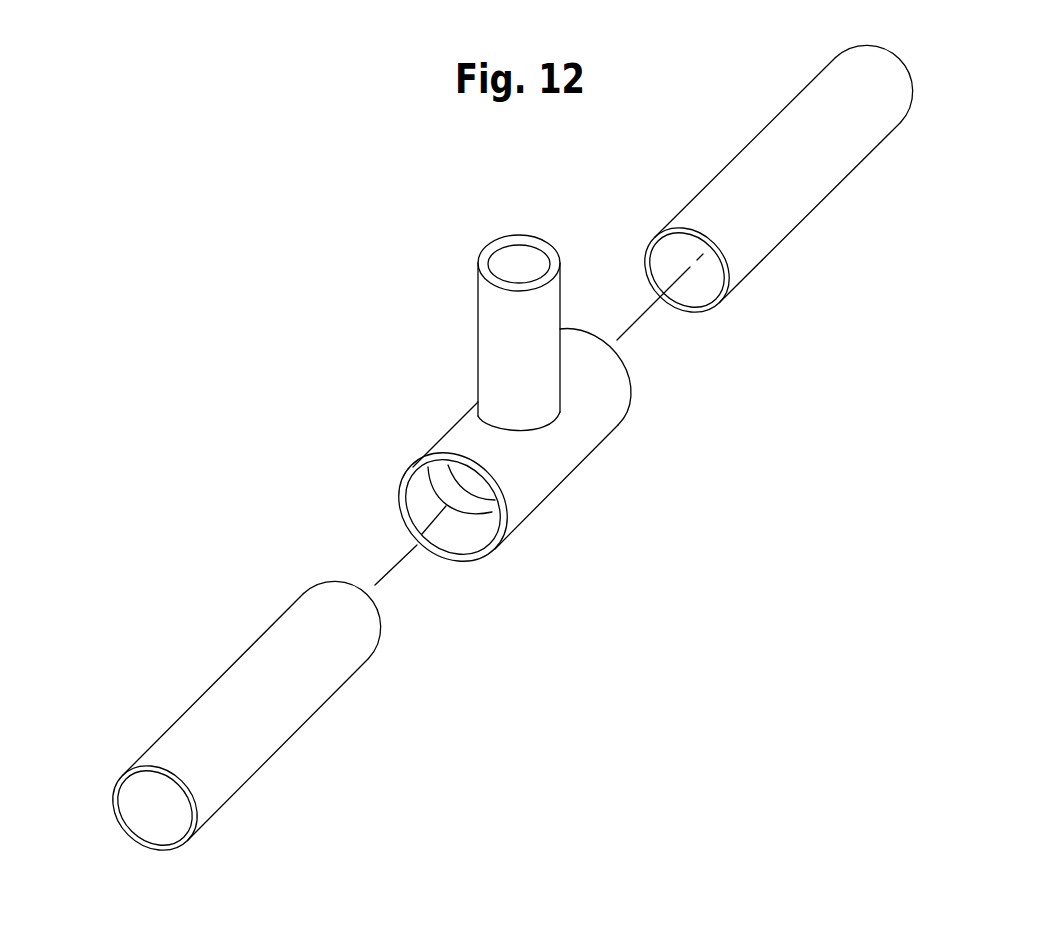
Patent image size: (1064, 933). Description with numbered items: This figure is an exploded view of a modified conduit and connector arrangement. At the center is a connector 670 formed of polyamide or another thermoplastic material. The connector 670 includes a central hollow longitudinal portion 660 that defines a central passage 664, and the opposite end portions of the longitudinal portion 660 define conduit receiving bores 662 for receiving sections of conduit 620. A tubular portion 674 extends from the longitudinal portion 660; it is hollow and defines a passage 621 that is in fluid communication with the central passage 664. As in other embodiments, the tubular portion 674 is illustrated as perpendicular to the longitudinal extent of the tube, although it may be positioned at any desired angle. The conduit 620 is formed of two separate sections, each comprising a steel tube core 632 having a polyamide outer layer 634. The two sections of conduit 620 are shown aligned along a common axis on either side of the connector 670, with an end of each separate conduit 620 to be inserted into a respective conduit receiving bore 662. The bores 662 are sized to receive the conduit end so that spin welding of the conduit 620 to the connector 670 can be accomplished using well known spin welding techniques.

The conduit 620 is at (790, 239).
The passage 621 is at (160, 814).
The steel tube core 632 is at (708, 310).
The polyamide outer layer 634 is at (842, 163).
The central hollow longitudinal portion 660 is at (577, 450).
The conduit receiving bore 662 is at (467, 542).
The central passage 664 is at (458, 493).
The connector 670 is at (466, 298).
The tubular portion 674 is at (478, 326).